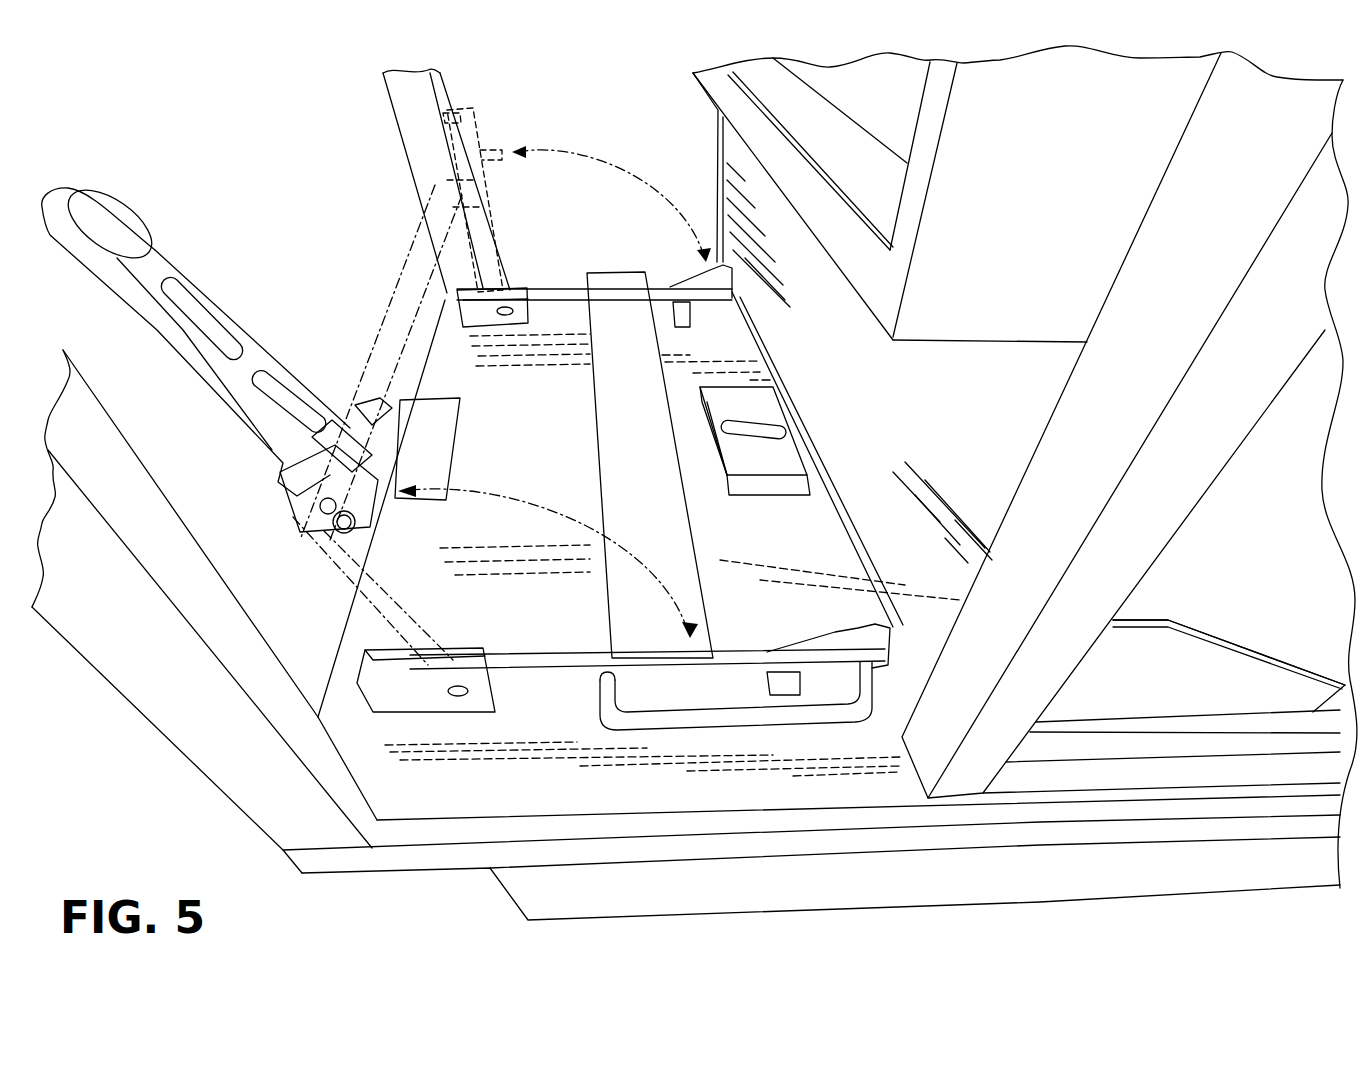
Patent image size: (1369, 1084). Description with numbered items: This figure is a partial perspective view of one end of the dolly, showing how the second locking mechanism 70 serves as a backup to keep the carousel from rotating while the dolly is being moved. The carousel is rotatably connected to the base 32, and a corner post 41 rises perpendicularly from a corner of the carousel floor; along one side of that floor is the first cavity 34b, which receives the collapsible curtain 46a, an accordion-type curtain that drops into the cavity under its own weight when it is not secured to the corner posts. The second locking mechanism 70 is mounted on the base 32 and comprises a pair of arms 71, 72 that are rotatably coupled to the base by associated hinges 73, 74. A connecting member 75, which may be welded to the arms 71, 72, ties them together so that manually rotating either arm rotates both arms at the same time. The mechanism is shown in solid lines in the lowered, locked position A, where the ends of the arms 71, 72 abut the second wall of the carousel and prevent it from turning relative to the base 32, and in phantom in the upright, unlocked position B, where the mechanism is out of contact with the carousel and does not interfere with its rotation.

The base 32 is at (615, 893).
The corner post 41 is at (1016, 738).
The first cavity 34b is at (1181, 785).
The collapsible curtain 46a is at (1229, 652).
The second locking mechanism 70 is at (386, 281).
The arm 71 is at (556, 286).
The arm 72 is at (545, 680).
The hinge 73 is at (488, 312).
The hinge 74 is at (457, 696).
The connecting member 75 is at (625, 286).
The locked position A is at (650, 252).
The unlocked position B is at (463, 95).